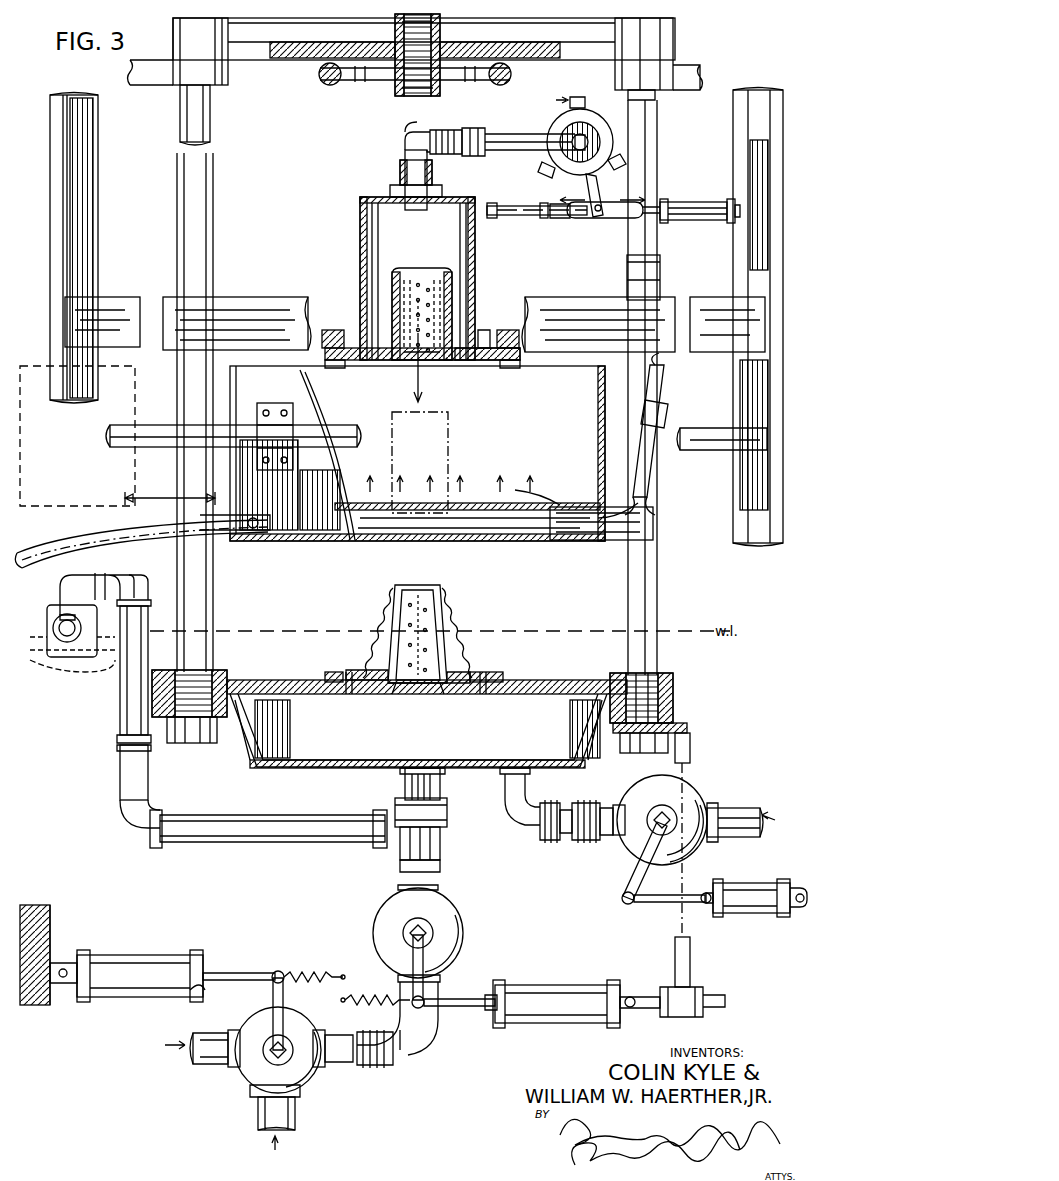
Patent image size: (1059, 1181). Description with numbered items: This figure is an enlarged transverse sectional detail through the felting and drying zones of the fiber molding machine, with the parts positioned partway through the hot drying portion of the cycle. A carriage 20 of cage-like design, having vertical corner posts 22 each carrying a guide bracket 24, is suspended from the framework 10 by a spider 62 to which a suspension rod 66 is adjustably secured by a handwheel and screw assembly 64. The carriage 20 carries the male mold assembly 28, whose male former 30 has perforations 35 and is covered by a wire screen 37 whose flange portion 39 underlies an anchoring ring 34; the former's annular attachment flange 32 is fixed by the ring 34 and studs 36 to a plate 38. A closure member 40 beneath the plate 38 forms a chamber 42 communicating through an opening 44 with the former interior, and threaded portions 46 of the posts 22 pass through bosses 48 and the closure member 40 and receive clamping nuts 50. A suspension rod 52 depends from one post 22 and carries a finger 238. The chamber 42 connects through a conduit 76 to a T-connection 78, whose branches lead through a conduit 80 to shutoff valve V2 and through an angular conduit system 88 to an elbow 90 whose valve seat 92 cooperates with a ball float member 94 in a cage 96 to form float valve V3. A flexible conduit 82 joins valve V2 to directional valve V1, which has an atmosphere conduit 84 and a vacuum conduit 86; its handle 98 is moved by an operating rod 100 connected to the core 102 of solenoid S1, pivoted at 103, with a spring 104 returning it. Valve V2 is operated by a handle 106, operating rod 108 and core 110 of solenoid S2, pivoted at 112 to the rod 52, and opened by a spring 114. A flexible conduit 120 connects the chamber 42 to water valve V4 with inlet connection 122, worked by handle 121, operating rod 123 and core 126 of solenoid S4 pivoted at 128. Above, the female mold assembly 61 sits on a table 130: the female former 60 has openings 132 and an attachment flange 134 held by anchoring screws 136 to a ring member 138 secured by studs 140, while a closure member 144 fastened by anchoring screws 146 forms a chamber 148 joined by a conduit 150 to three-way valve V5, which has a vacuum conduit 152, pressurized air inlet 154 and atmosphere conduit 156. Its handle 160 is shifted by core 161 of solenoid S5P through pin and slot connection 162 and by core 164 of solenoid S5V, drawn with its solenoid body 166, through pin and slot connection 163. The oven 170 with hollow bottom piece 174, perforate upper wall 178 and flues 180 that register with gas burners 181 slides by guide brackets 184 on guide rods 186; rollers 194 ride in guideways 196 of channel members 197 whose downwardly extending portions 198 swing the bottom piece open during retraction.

The spider 62 is at (285, 47).
The suspension rod 66 is at (395, 32).
The guide bracket 24 is at (228, 74).
The handwheel and screw assembly 64 is at (512, 75).
The framework 10 is at (98, 218).
The vertical corner posts 22 is at (658, 580).
The supporting plate or table 130 is at (560, 352).
The attachment flange 134 is at (375, 360).
The anchoring screws 136 is at (340, 368).
The ring member 138 is at (505, 362).
The studs 140 is at (335, 330).
The anchoring screws 146 is at (484, 330).
The chamber 148 is at (362, 222).
The closure member 144 is at (470, 280).
The conduit 150 is at (410, 148).
The female former proper 60 is at (432, 268).
The female mold assembly 61 is at (426, 243).
The openings 132 is at (420, 268).
The 3-way valve V5 is at (613, 140).
The inlet 154 is at (585, 104).
The conduit 152 is at (538, 170).
The conduit 156 is at (620, 162).
The valve handle 160 is at (596, 188).
The solenoid S5P is at (492, 218).
The core 161 is at (545, 218).
The pin and slot connection 162 is at (566, 218).
The pin and slot connection 163 is at (600, 218).
The movable core 164 is at (650, 216).
The cylinder 166 is at (675, 204).
The solenoid S5V is at (712, 220).
The casing or oven 170 is at (278, 395).
The hollow bottom piece 174 is at (345, 538).
The perforate upper wall 178 is at (470, 503).
The guide rods 186 is at (140, 425).
The guide brackets 184 is at (290, 432).
The rollers 194 is at (254, 530).
The downwardly extending portions 198 is at (40, 545).
The guideways 196 is at (90, 545).
The channel members 197 is at (92, 535).
The flame-guiding tubes or flues 180 is at (608, 540).
The gas burners or jets 181 is at (652, 450).
The carriage 20 is at (528, 595).
The plate or table portion 38 is at (262, 682).
The chamber or cavity 42 is at (323, 743).
The cavity-forming closure member 40 is at (285, 768).
The opening 44 is at (440, 697).
The male former proper 30 is at (438, 586).
The male mold assembly 28 is at (416, 580).
The perforations 35 is at (447, 645).
The wire screen 37 is at (392, 620).
The flange portion 39 is at (348, 668).
The studs 36 is at (333, 672).
The annular attachment flange 32 is at (372, 680).
The anchoring ring 34 is at (510, 684).
The threaded portions 46 is at (220, 682).
The bosses 48 is at (673, 702).
The clamping nut 50 is at (175, 743).
The suspension rod 52 is at (690, 750).
The float valve V3 is at (70, 654).
The elbow 90 is at (60, 586).
The valve seat 92 is at (55, 628).
The shutoff ball float member 94 is at (45, 632).
The cage 96 is at (58, 662).
The finger 238 is at (157, 693).
The angular conduit system 88 is at (208, 817).
The conduit 76 is at (440, 790).
The 3-way T-connection 78 is at (447, 822).
The conduit 80 is at (440, 853).
The flexible conduit 120 is at (521, 845).
The shutoff valve V4 is at (660, 820).
The inlet connection 122 is at (733, 815).
The operating handle 121 is at (630, 890).
The operating rod 123 is at (660, 902).
The movable core 126 is at (710, 905).
The solenoid S4 is at (751, 898).
The pivot 128 is at (797, 888).
The shut-off valve V2 is at (418, 933).
The valve handle 106 is at (440, 965).
The operating rod 108 is at (468, 1007).
The spring 114 is at (372, 998).
The core 110 is at (490, 1012).
The solenoid S2 is at (556, 1004).
The pivot 112 is at (630, 1010).
The flexible conduit 82 is at (385, 1070).
The 2-way directional valve V1 is at (294, 1050).
The valve handle 98 is at (276, 972).
The conduit 86 is at (205, 1033).
The conduit 84 is at (258, 1110).
The control solenoid S1 is at (140, 976).
The pivot 103 is at (65, 965).
The movable core 102 is at (195, 990).
The operating rod 100 is at (223, 972).
The spring 104 is at (308, 974).